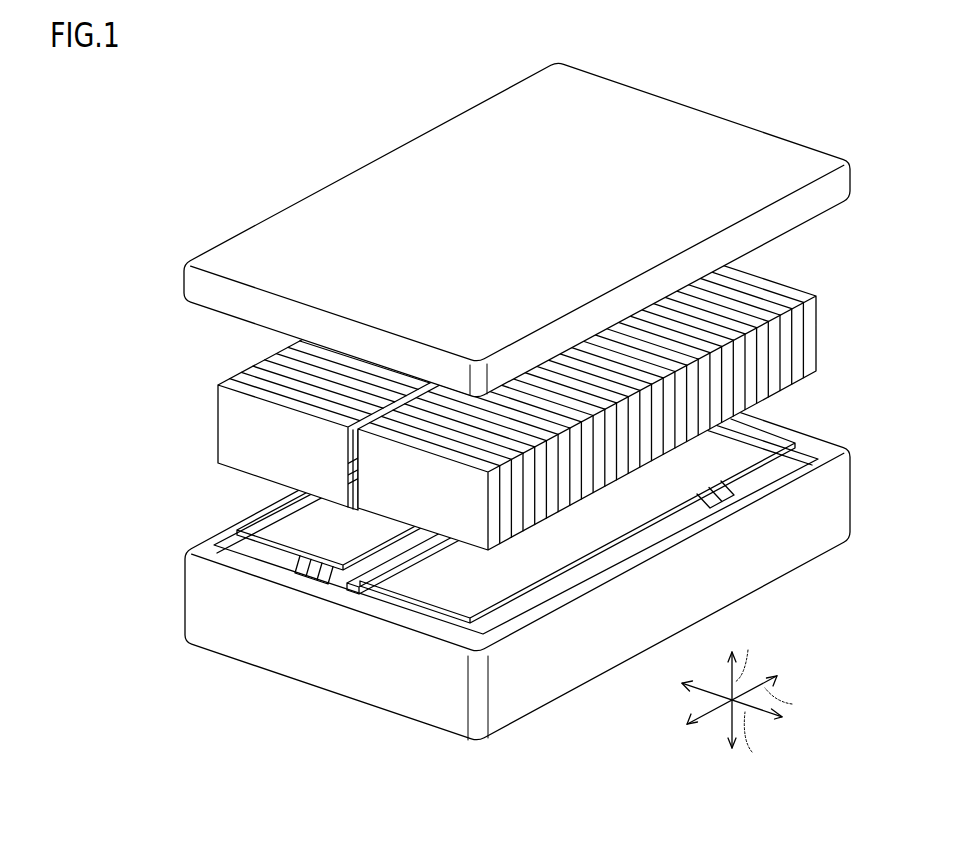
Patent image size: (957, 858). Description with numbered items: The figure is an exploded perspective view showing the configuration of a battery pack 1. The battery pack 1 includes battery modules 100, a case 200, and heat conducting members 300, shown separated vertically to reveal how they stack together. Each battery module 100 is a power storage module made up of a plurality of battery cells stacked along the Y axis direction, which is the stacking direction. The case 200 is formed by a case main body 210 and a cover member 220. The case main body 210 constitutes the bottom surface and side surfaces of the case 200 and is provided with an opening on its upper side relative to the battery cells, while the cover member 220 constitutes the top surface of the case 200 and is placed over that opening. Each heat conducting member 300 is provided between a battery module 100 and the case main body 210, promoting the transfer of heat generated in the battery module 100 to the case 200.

The battery pack 1 is at (295, 143).
The battery module 100 is at (794, 270).
The case 200 is at (119, 274).
The case main body 210 is at (203, 608).
The cover member 220 is at (203, 290).
The heat conducting member 300 is at (277, 526).